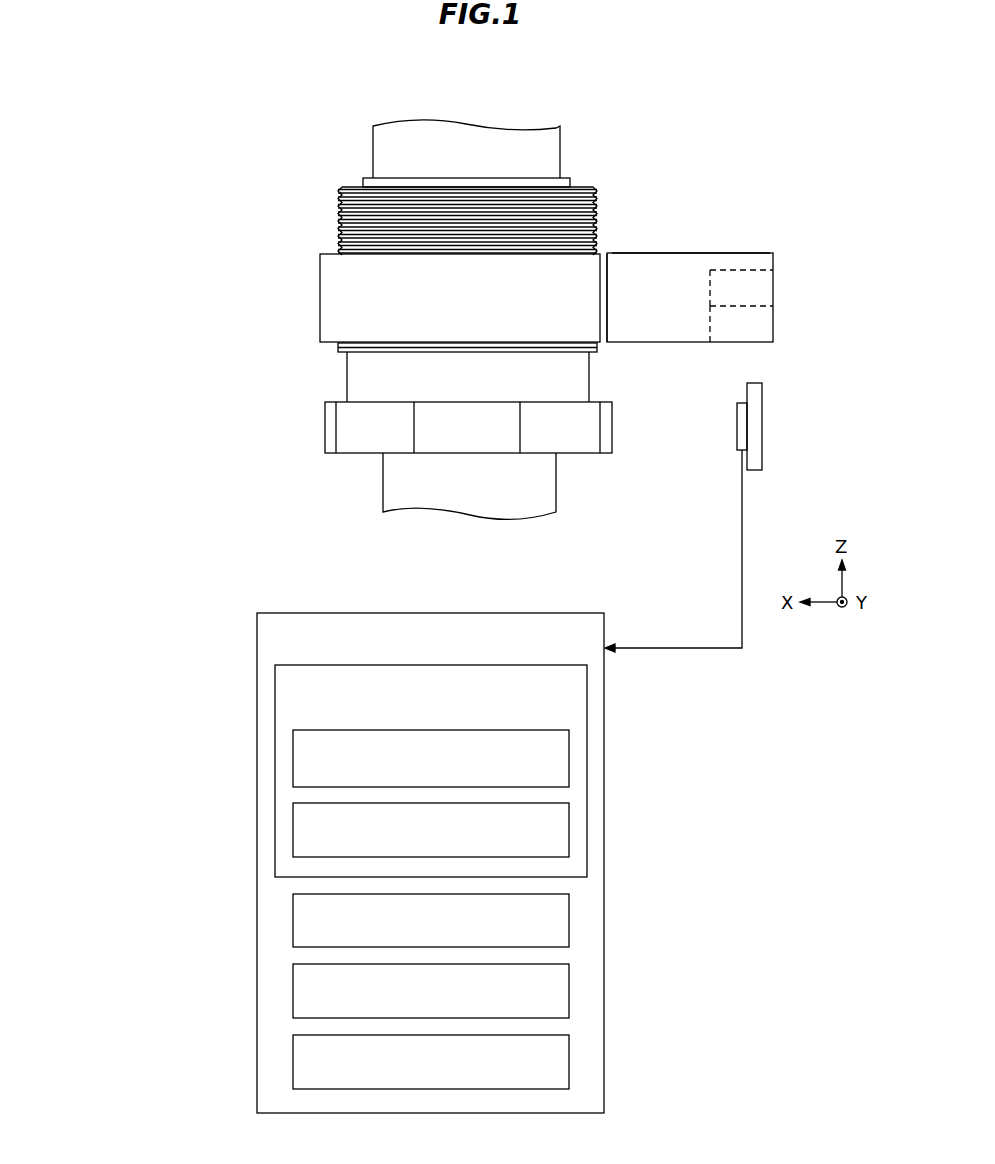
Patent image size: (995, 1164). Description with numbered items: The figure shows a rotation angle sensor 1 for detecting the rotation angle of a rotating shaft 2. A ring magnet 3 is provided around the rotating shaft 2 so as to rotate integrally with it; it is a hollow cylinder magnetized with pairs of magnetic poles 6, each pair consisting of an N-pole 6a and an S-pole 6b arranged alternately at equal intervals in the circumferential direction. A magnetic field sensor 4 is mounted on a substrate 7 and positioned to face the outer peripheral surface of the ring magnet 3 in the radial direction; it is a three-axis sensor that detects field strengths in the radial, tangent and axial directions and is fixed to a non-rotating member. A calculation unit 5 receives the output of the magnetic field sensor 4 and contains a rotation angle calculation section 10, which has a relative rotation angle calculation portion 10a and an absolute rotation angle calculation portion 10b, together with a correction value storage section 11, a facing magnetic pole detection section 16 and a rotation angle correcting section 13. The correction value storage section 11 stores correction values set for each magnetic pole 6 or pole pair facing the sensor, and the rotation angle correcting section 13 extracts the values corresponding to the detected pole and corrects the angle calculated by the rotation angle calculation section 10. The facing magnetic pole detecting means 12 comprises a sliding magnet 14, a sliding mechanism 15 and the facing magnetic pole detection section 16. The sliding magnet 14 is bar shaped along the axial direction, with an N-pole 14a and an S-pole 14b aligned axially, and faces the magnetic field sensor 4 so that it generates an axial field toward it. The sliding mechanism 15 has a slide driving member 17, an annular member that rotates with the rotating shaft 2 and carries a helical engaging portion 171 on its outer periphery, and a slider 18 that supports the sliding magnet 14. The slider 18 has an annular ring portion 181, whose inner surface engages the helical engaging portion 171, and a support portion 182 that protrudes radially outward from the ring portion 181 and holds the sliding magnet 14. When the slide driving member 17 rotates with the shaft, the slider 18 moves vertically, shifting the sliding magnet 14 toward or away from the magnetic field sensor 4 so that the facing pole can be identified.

The rotation angle sensor 1 is at (312, 432).
The rotating shaft 2 is at (381, 132).
The ring magnet 3 is at (327, 402).
The magnetic field sensor 4 is at (735, 452).
The calculation unit 5 is at (601, 613).
The magnetic pole 6 is at (308, 470).
The N-pole 6a is at (445, 443).
The S-pole 6b is at (357, 443).
The substrate 7 is at (764, 459).
The rotation angle calculation section 10 is at (588, 698).
The relative rotation angle calculation portion 10a is at (570, 758).
The absolute rotation angle calculation portion 10b is at (570, 832).
The correction value storage section 11 is at (570, 991).
The facing magnetic pole detecting means 12 is at (668, 213).
The rotation angle correcting section 13 is at (570, 1061).
The sliding magnet 14 is at (833, 276).
The N-pole 14a is at (770, 328).
The S-pole 14b is at (770, 292).
The sliding mechanism 15 is at (735, 236).
The facing magnetic pole detection section 16 is at (570, 921).
The slide driving member 17 is at (363, 178).
The helical engaging portion 171 is at (597, 201).
The slider 18 is at (775, 253).
The ring portion 181 is at (606, 253).
The support portion 182 is at (688, 257).